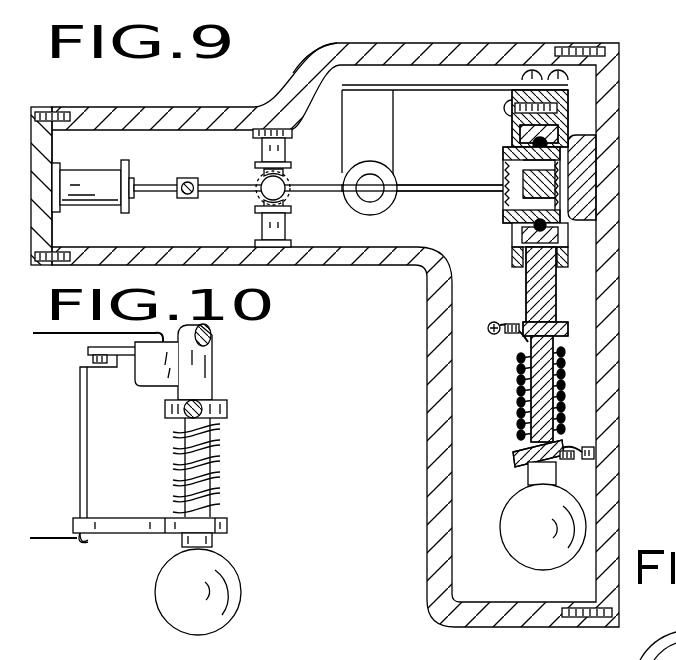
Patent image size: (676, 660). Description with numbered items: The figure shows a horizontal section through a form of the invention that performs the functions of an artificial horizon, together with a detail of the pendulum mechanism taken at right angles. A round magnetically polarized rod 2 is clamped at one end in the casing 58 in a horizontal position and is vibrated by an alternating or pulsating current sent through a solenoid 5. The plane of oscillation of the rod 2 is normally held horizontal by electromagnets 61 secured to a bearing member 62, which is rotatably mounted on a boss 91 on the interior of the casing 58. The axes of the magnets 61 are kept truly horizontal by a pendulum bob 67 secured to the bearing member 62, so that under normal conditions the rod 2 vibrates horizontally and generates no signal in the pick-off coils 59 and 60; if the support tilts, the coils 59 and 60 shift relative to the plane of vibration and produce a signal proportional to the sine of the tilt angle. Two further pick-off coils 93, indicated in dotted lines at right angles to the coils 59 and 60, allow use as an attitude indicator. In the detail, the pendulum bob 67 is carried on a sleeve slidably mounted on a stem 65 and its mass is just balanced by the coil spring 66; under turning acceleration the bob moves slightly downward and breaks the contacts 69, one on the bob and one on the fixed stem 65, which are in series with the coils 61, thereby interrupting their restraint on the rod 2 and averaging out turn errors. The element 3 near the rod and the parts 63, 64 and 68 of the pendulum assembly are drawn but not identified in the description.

In FIG. 9, the magnetically polarized rod 2 is at (230, 183).
In FIG. 9, the rod guide 3 is at (191, 178).
In FIG. 9, the solenoid 5 is at (103, 170).
In FIG. 9, the casing 58 is at (213, 107).
In FIG. 9, the pick-off coil 59 is at (290, 152).
In FIG. 9, the pick-off coil 60 is at (291, 217).
In FIG. 9, the electromagnets 61 is at (397, 177).
In FIG. 9, the bearing member 62 is at (510, 135).
In FIG. 9, the shaft 63 is at (525, 290).
In FIG. 9, the retaining screw / collar 64 is at (557, 348).
In FIG. 10, the retaining screw / collar 64 is at (212, 546).
In FIG. 9, the stem 65 is at (543, 373).
In FIG. 10, the stem 65 is at (213, 360).
In FIG. 9, the coil spring 66 is at (562, 413).
In FIG. 10, the coil spring 66 is at (219, 470).
In FIG. 9, the pendulum bob 67 is at (502, 530).
In FIG. 10, the pendulum bob 67 is at (232, 582).
In FIG. 9, the nut 68 is at (506, 200).
In FIG. 10, the contacts 69 is at (90, 359).
In FIG. 9, the boss 91 is at (606, 182).
In FIG. 9, the pick-off coils 93 is at (288, 178).